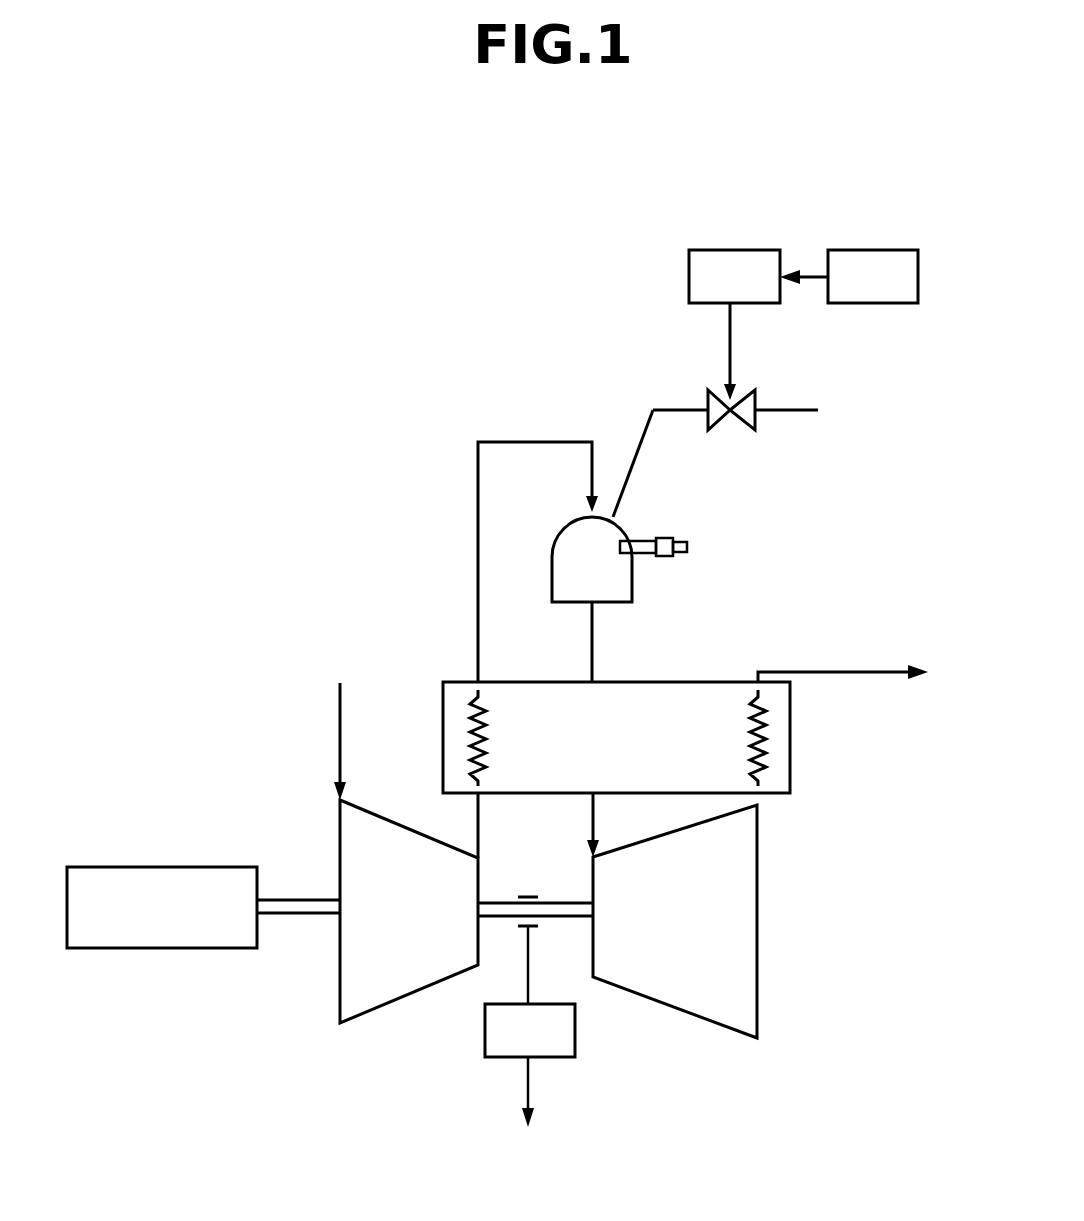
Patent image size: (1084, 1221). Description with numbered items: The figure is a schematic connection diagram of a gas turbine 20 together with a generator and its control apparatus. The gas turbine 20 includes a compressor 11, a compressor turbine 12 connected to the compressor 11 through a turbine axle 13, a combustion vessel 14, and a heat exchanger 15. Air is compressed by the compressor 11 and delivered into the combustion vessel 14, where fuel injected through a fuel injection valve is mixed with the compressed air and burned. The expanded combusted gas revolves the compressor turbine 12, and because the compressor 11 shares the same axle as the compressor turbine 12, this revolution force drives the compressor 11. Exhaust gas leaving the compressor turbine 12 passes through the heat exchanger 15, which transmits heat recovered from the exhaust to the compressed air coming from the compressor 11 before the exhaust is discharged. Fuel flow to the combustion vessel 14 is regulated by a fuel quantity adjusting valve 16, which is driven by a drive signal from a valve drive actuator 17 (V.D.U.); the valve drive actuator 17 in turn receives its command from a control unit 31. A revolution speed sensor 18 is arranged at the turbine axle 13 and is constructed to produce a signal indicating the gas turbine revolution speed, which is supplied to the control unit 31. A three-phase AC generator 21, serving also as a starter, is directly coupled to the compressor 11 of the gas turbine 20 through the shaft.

The gas turbine 20 is at (413, 580).
The compressor 11 is at (397, 1003).
The compressor turbine 12 is at (687, 1017).
The turbine axle 13 is at (556, 905).
The combustion vessel 14 is at (633, 570).
The heat exchanger 15 is at (790, 747).
The fuel quantity adjusting valve 16 is at (723, 420).
The valve drive actuator 17 is at (733, 250).
The revolution speed sensor 18 is at (575, 1027).
The three-phase AC generator 21 is at (173, 866).
The control unit 31 is at (870, 250).